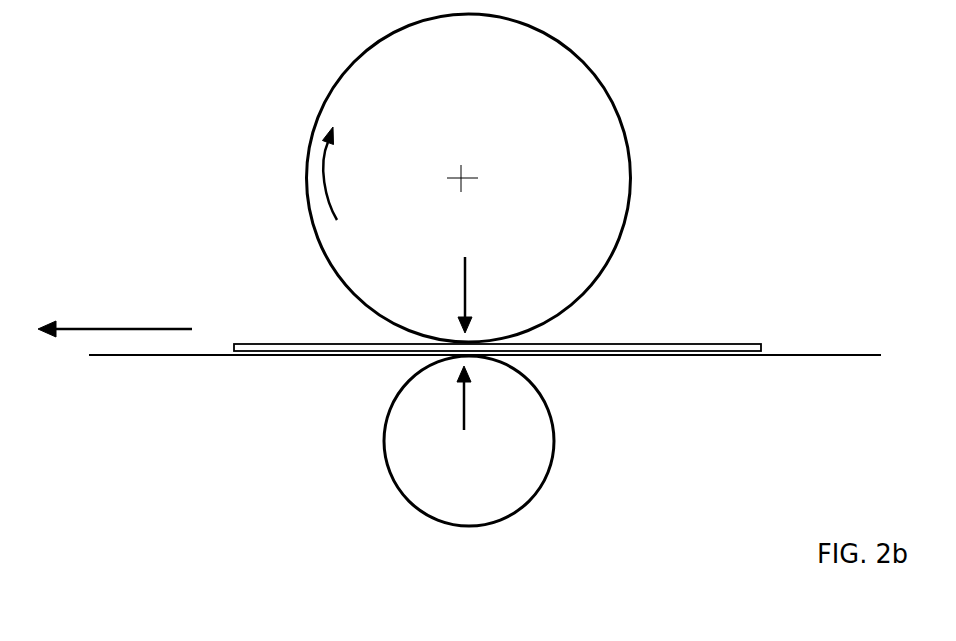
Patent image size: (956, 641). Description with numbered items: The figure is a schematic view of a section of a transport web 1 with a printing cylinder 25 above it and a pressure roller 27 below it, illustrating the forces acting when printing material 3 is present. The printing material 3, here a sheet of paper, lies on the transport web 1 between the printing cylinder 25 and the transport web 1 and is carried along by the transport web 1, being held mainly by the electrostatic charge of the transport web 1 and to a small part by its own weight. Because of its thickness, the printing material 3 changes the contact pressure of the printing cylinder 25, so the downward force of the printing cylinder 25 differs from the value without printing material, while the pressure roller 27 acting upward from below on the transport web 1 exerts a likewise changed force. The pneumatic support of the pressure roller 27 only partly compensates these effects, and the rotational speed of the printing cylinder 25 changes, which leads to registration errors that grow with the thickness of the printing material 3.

The transport web 1 is at (825, 351).
The printing material 3 is at (277, 344).
The printing cylinder 25 is at (590, 132).
The pressure roller 27 is at (500, 442).